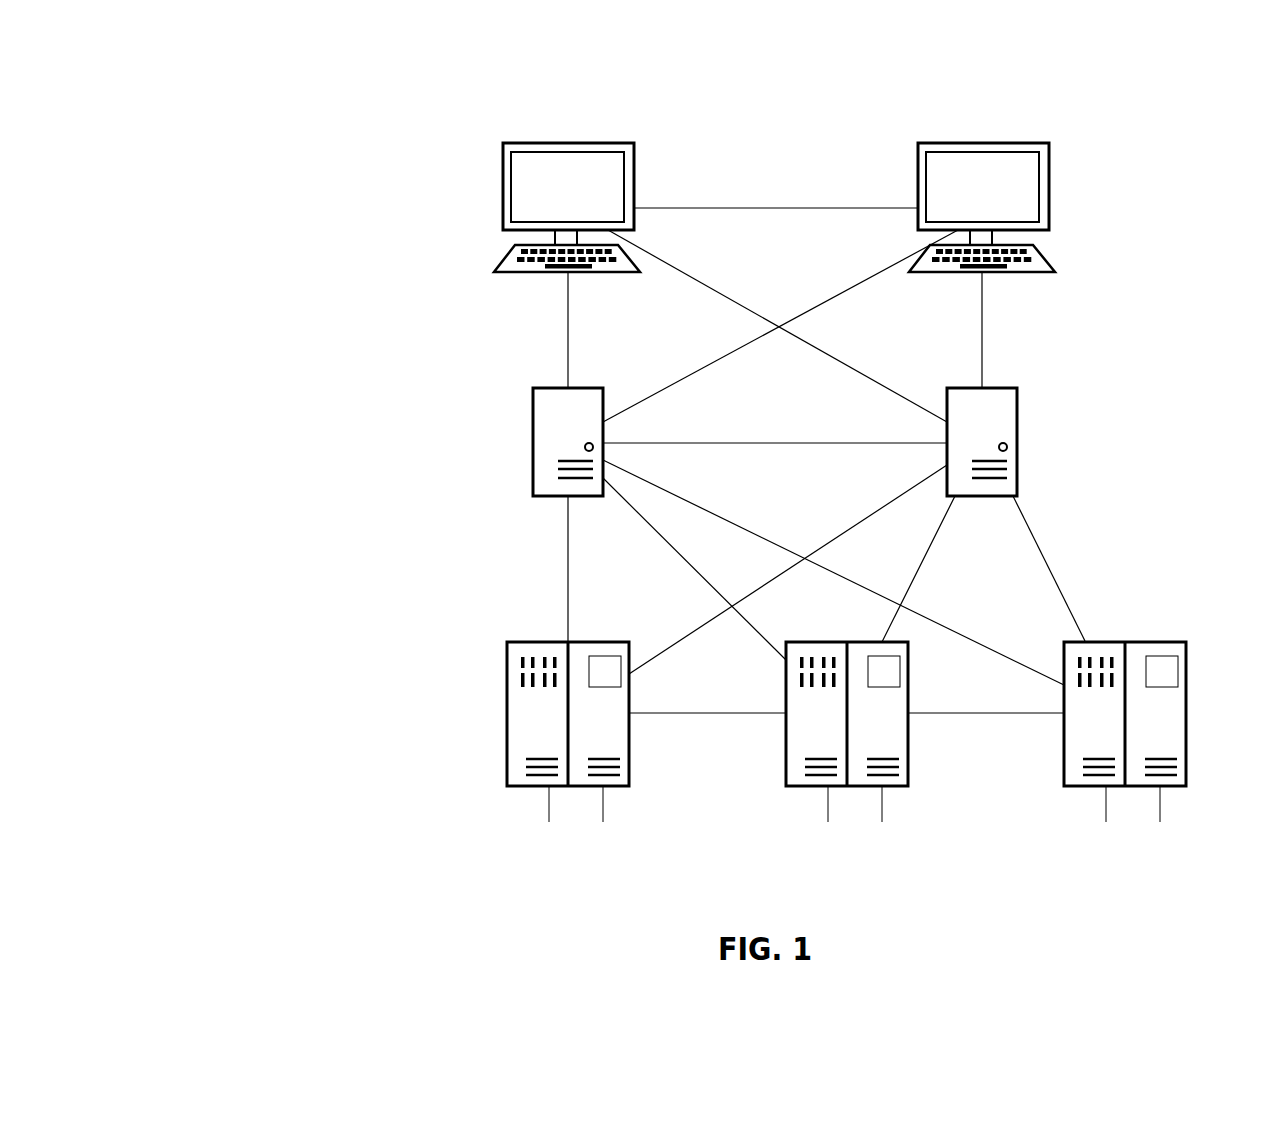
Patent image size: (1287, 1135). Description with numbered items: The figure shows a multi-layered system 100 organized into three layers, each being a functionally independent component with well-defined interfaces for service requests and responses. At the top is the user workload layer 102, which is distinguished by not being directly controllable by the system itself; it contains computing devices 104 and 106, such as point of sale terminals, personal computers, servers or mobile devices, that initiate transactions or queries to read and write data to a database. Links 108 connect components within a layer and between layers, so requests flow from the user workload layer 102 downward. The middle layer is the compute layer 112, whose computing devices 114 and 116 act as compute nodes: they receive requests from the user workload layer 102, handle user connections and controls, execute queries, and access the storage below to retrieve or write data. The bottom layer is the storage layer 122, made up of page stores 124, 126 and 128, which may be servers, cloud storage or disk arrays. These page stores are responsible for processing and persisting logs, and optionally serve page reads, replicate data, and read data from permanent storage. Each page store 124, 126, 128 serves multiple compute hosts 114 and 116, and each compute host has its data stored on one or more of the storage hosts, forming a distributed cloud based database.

The multi-layered system 100 is at (1180, 72).
The user workload layer 102 is at (293, 180).
The computing device 104 is at (515, 140).
The computing device 106 is at (925, 140).
The links 108 is at (779, 198).
The compute layer 112 is at (312, 416).
The computing device 114 is at (532, 398).
The computing device 116 is at (960, 381).
The storage layer 122 is at (312, 688).
The page store 124 is at (527, 632).
The page store 126 is at (853, 634).
The page store 128 is at (1152, 632).